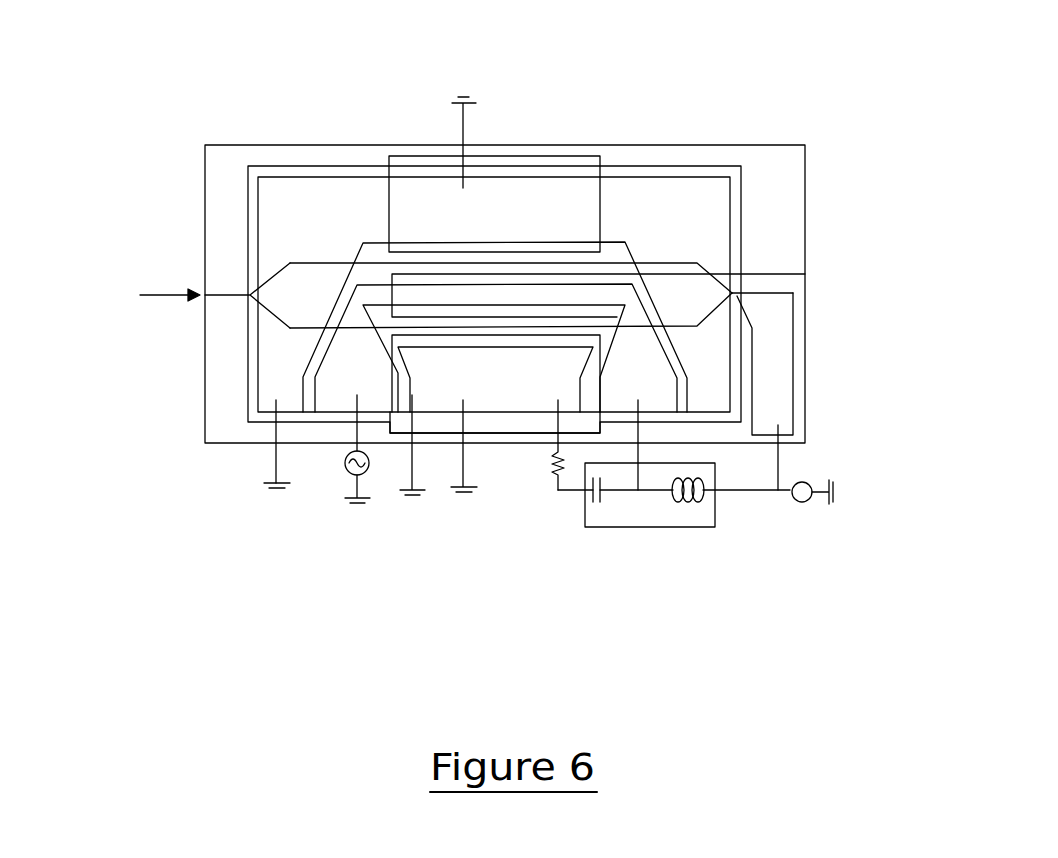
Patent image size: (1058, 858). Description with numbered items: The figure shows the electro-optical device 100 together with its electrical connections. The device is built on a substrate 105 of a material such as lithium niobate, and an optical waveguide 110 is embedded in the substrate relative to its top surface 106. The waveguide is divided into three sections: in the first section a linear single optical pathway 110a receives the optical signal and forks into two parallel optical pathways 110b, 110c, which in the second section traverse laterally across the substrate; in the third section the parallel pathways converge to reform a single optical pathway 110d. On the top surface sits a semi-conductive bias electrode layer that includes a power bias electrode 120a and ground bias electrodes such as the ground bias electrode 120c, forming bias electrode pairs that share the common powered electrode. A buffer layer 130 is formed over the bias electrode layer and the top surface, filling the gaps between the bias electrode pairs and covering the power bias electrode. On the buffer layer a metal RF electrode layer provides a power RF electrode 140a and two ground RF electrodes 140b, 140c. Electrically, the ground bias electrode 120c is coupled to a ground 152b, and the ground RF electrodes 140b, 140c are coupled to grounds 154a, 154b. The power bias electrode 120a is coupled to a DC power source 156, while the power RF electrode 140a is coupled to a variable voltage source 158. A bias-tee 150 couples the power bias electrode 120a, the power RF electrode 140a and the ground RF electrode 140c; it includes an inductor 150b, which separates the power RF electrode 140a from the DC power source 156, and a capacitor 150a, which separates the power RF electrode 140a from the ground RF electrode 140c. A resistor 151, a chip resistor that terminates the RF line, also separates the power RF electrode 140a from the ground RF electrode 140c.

The electro-optical device 100 is at (823, 76).
The substrate 105 is at (807, 195).
The top surface 106 is at (787, 178).
The optical waveguide 110 is at (528, 228).
The single optical pathway 110a is at (250, 295).
The parallel optical pathway 110b is at (323, 262).
The parallel optical pathway 110c is at (303, 328).
The single optical pathway 110d is at (768, 293).
The power bias electrode 120a is at (788, 353).
The ground bias electrode 120c is at (447, 425).
The buffer layer 130 is at (740, 397).
The power RF electrode 140a is at (337, 400).
The ground RF electrode 140b is at (268, 383).
The ground RF electrode 140c is at (530, 400).
The bias-tee 150 is at (683, 551).
The capacitor 150a is at (598, 507).
The inductor 150b is at (697, 505).
The resistor 151 is at (553, 477).
The ground 152b is at (408, 473).
The ground 154a is at (272, 473).
The ground 154b is at (470, 470).
The DC power source 156 is at (797, 503).
The variable voltage source 158 is at (350, 475).